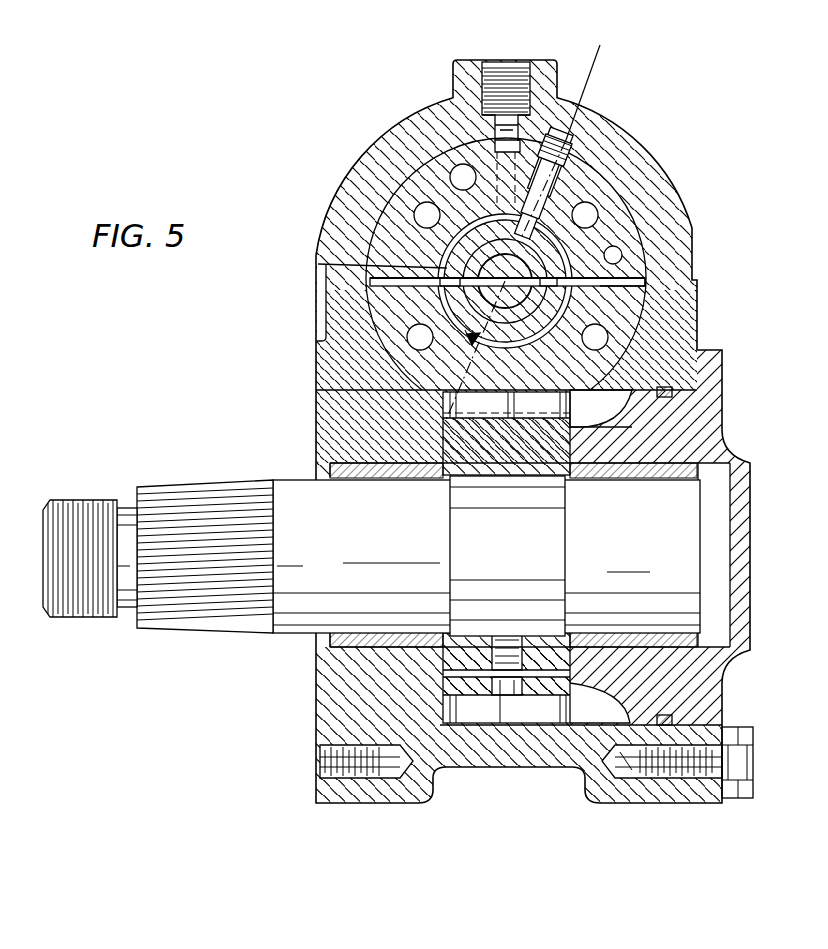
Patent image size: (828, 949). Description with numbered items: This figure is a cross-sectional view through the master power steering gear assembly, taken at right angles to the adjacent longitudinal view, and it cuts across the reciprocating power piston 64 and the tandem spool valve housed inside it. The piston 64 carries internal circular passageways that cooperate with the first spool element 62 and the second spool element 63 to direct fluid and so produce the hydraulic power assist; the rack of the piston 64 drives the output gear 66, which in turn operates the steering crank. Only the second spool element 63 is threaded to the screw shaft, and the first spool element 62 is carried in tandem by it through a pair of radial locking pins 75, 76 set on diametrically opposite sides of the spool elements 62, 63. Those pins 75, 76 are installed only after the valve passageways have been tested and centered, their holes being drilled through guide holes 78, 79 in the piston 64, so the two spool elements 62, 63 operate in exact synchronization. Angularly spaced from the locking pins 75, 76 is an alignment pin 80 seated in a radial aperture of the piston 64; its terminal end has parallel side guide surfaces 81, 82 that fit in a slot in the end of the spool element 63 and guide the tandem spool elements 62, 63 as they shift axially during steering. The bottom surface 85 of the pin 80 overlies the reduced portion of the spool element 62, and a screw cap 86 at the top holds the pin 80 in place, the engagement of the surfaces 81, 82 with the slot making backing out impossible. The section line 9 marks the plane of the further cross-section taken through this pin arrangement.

The section line 9— 9 is at (600, 45).
The first spool element 62 is at (470, 260).
The second spool element 63 is at (453, 304).
The reciprocating power piston 64 is at (607, 197).
The output gear 66 is at (522, 457).
The radial locking pin 75 is at (318, 264).
The radial locking pin 76 is at (570, 292).
The guide hole 78 is at (368, 283).
The guide hole 79 is at (650, 283).
The alignment pin 80 is at (578, 178).
The side guide surface 81 is at (500, 222).
The side guide surface 82 is at (540, 243).
The bottom surface 85 is at (505, 281).
The screw cap 86 is at (560, 185).